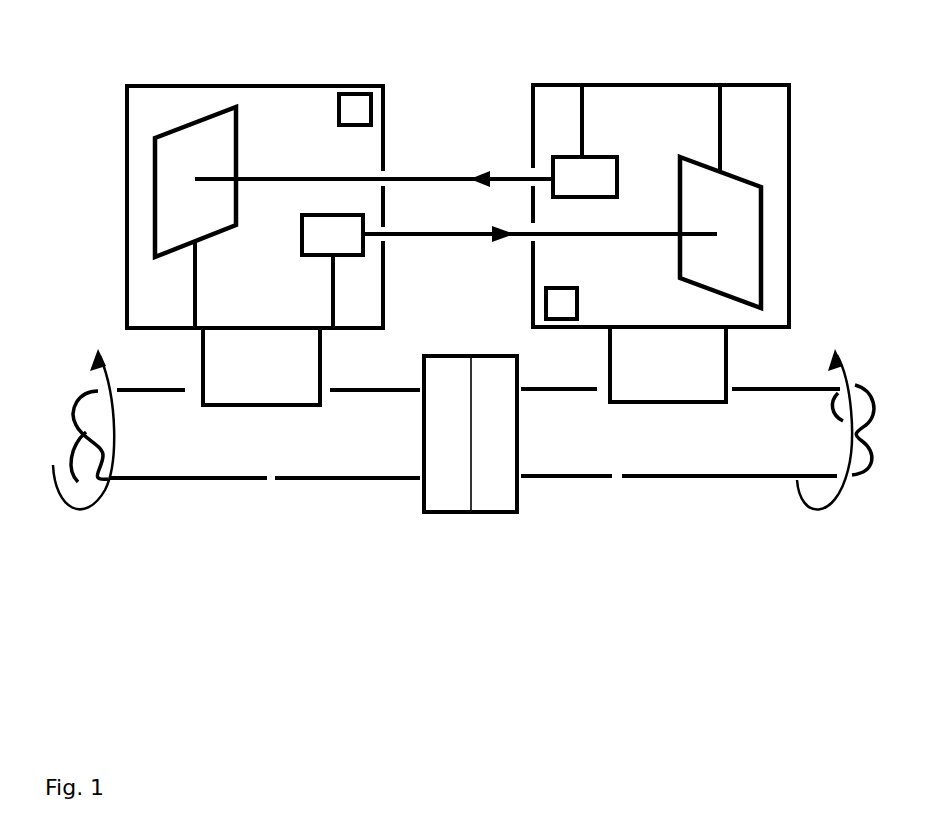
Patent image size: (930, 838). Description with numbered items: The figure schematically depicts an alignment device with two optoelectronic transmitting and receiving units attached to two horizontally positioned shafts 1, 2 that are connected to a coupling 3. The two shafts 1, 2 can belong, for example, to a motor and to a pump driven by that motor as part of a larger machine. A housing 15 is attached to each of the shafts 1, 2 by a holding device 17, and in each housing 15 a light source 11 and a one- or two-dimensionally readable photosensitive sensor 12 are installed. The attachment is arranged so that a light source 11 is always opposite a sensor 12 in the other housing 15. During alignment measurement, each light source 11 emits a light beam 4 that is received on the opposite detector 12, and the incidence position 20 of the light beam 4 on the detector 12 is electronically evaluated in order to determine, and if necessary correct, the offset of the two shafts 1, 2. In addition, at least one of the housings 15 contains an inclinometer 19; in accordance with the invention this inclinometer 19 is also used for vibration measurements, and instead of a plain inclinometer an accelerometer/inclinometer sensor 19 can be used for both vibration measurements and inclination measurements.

The shaft 1 is at (270, 457).
The shaft 2 is at (620, 440).
The coupling 3 is at (495, 485).
The light beam 4 is at (427, 175).
The light source 11 is at (343, 243).
The photosensitive sensor 12 is at (208, 133).
The housing 15 is at (283, 85).
The holding device 17 is at (297, 393).
The inclinometer 19 is at (355, 105).
The incidence position 20 is at (197, 180).